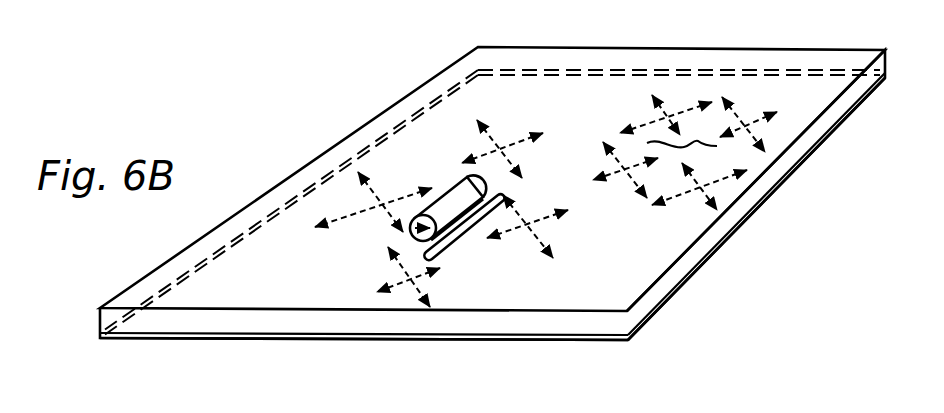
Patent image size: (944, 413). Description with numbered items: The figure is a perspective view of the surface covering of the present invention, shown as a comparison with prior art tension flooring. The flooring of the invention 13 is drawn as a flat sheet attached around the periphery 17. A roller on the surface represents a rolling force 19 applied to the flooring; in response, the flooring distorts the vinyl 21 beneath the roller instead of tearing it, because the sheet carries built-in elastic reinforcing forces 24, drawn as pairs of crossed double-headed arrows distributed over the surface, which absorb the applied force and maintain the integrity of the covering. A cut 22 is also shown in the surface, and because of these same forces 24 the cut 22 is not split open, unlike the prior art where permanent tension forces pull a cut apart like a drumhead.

The flooring of the invention 13 is at (268, 238).
The periphery 17 is at (193, 338).
The rolling force 19 is at (447, 188).
The vinyl 21 is at (493, 188).
The cut 22 is at (688, 144).
The built-in elastic reinforcing forces 24 is at (356, 213).